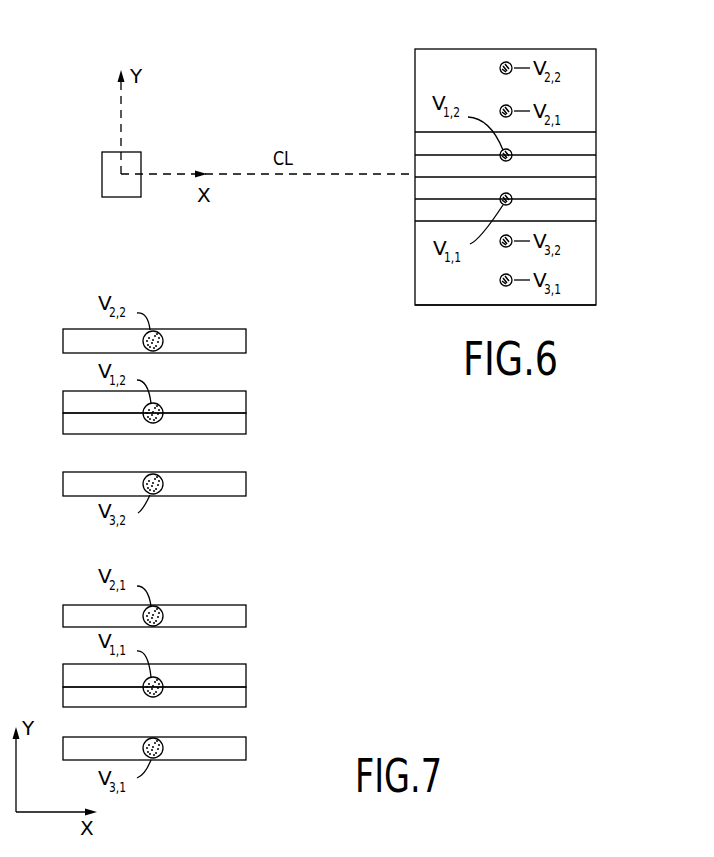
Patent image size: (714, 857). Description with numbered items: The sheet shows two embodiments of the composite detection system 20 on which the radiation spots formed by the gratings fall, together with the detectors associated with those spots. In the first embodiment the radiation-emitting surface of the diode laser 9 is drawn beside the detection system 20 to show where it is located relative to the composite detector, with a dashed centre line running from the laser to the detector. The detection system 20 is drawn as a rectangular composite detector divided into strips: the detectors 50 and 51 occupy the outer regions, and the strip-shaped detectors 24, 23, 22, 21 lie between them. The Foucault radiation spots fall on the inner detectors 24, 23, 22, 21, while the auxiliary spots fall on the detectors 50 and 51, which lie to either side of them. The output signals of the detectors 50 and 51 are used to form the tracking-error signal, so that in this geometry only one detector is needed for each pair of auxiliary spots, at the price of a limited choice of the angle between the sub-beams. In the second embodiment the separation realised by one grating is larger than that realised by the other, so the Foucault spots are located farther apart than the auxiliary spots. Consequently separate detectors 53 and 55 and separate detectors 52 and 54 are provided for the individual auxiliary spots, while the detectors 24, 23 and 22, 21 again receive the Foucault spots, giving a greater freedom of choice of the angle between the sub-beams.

In FIG. 6, the detection system 20 is at (592, 40).
In FIG. 7, the detection system 20 is at (261, 318).
In FIG. 6, the diode laser 9 is at (125, 197).
In FIG. 6, the detector 50 is at (588, 98).
In FIG. 6, the detector 51 is at (588, 264).
In FIG. 7, the detector 52 is at (240, 488).
In FIG. 7, the detector 53 is at (243, 341).
In FIG. 7, the detector 54 is at (240, 755).
In FIG. 7, the detector 55 is at (240, 620).
In FIG. 6, the detector 21 is at (590, 212).
In FIG. 7, the detector 21 is at (240, 698).
In FIG. 6, the detector 22 is at (587, 188).
In FIG. 7, the detector 22 is at (240, 677).
In FIG. 6, the detector 23 is at (587, 166).
In FIG. 7, the detector 23 is at (240, 425).
In FIG. 6, the detector 24 is at (587, 145).
In FIG. 7, the detector 24 is at (240, 405).